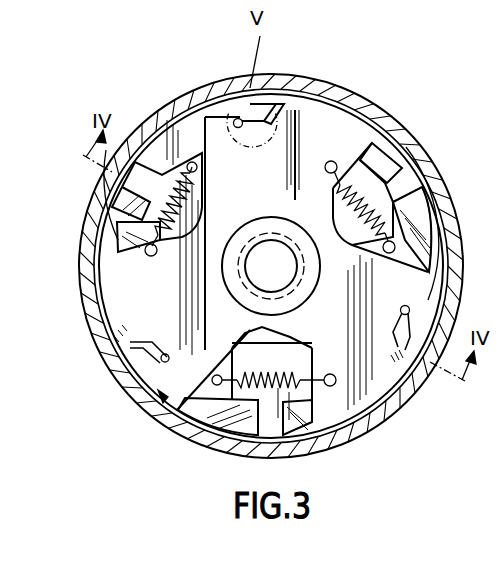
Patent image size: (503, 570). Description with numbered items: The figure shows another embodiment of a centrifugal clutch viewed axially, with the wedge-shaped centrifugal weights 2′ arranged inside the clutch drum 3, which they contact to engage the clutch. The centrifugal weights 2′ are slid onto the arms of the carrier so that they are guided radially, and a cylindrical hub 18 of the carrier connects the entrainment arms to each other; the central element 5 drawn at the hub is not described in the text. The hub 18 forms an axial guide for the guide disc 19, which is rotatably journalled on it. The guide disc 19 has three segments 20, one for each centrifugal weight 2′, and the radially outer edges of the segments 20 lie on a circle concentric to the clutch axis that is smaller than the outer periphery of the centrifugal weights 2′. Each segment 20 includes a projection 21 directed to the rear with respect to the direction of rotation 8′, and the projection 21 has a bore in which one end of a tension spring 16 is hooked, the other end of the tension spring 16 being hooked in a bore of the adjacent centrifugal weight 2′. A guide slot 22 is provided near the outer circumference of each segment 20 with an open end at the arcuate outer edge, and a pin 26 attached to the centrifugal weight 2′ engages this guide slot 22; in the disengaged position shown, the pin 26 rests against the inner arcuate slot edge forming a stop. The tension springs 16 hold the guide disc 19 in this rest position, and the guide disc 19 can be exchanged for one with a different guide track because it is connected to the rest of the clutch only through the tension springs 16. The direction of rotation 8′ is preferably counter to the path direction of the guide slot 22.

The clutch drum 3 is at (378, 120).
The hub 5 is at (262, 249).
The cylindrical hub 18 is at (233, 285).
The segment 20 is at (267, 261).
The projection 21 is at (122, 242).
The tension spring 16 is at (382, 193).
The centrifugal weight 2′ is at (418, 215).
The guide slot 22 is at (258, 124).
The pin 26 is at (240, 127).
The guide disc 19 is at (162, 398).
The direction of rotation 8′ is at (136, 81).